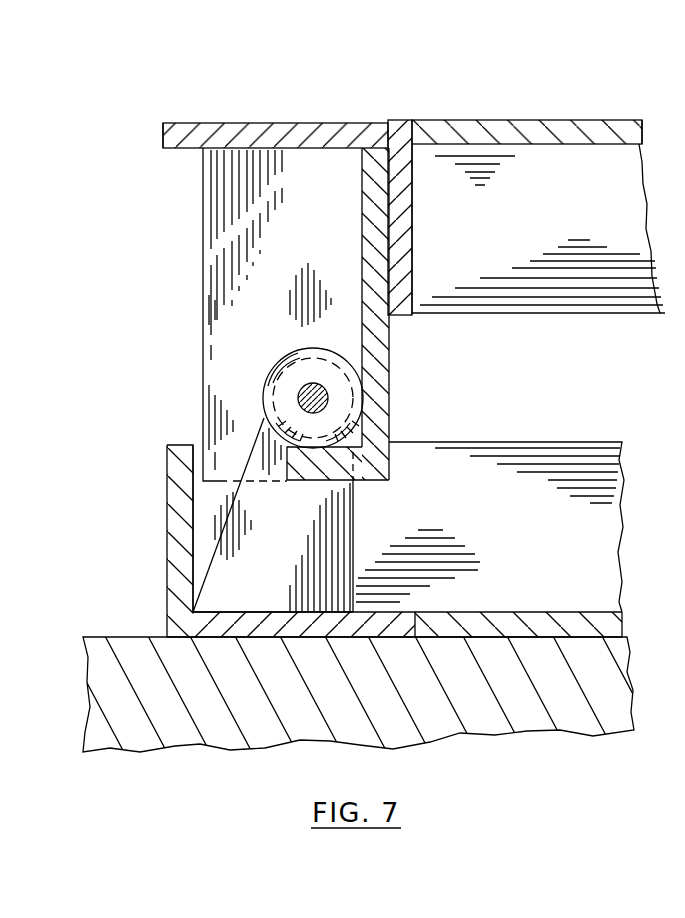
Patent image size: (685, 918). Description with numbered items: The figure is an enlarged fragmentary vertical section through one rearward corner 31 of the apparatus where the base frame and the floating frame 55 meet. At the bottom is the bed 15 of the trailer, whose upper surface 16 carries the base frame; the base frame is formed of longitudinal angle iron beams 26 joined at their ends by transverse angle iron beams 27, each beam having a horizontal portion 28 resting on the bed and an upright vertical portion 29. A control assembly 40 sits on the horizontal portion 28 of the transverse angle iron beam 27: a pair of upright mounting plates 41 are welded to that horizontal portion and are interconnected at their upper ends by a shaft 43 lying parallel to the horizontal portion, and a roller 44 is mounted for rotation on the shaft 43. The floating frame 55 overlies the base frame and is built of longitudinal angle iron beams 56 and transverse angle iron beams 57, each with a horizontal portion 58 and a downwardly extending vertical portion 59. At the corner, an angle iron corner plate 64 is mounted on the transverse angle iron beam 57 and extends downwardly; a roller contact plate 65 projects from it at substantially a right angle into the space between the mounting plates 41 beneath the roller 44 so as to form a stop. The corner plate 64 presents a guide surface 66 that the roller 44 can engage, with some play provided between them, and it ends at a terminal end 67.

The bed 15 is at (113, 703).
The upper surface 16 is at (532, 611).
The longitudinal angle iron beam 26 is at (600, 618).
The transverse angle iron beam 27 is at (174, 515).
The horizontal portion 28 is at (296, 628).
The vertical portion 29 is at (481, 511).
The rearward corner 31 is at (168, 548).
The control assembly 40 is at (276, 352).
The mounting plate 41 is at (261, 557).
The shaft 43 is at (314, 384).
The roller 44 is at (267, 380).
The floating frame 55 is at (423, 86).
The longitudinal angle iron beam 56 is at (531, 122).
The transverse angle iron beam 57 is at (274, 130).
The horizontal portion 58 is at (163, 137).
The vertical portion 59 is at (395, 178).
The angle iron corner plate 64 is at (291, 235).
The roller contact plate 65 is at (333, 483).
The guide surface 66 is at (362, 280).
The terminal end 67 is at (370, 483).